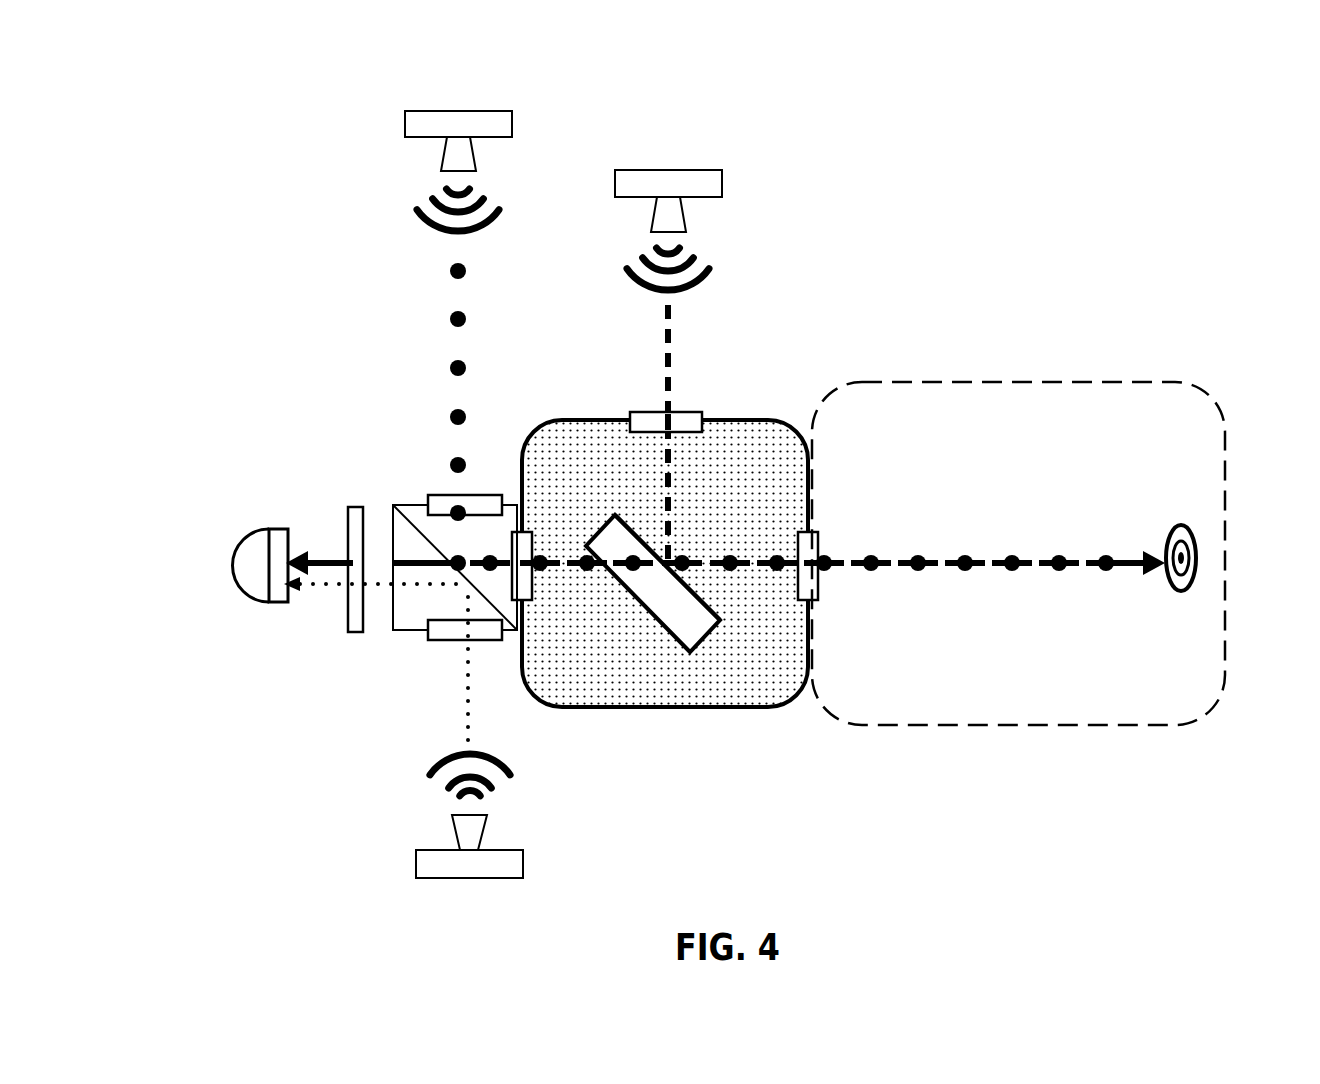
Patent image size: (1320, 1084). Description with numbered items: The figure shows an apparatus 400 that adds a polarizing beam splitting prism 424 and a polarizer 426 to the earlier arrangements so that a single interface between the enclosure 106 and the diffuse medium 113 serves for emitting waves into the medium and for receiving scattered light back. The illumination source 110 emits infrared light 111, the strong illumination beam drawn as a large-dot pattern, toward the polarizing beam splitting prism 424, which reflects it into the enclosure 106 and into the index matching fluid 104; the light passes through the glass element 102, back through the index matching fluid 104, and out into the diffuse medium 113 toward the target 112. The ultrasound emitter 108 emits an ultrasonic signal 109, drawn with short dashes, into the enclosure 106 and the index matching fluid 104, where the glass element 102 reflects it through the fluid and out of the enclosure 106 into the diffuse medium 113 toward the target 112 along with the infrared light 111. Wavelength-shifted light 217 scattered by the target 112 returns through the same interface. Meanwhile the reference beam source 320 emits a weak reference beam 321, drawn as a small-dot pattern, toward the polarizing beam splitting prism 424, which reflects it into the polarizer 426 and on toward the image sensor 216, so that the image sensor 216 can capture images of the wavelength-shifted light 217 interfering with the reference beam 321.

The apparatus 400 is at (218, 67).
The illumination source 110 is at (405, 137).
The ultrasound emitter 108 is at (613, 197).
The infrared light 111 is at (445, 315).
The ultrasonic signal 109 is at (660, 329).
The polarizing beam splitting prism 424 is at (407, 505).
The polarizer 426 is at (344, 527).
The image sensor 216 is at (244, 600).
The reference beam 321 is at (464, 732).
The reference beam source 320 is at (414, 865).
The wavelength-shifted light 217 is at (598, 567).
The glass element 102 is at (629, 600).
The index matching fluid 104 is at (622, 695).
The enclosure 106 is at (728, 709).
The diffuse medium 113 is at (853, 722).
The target 112 is at (1182, 592).